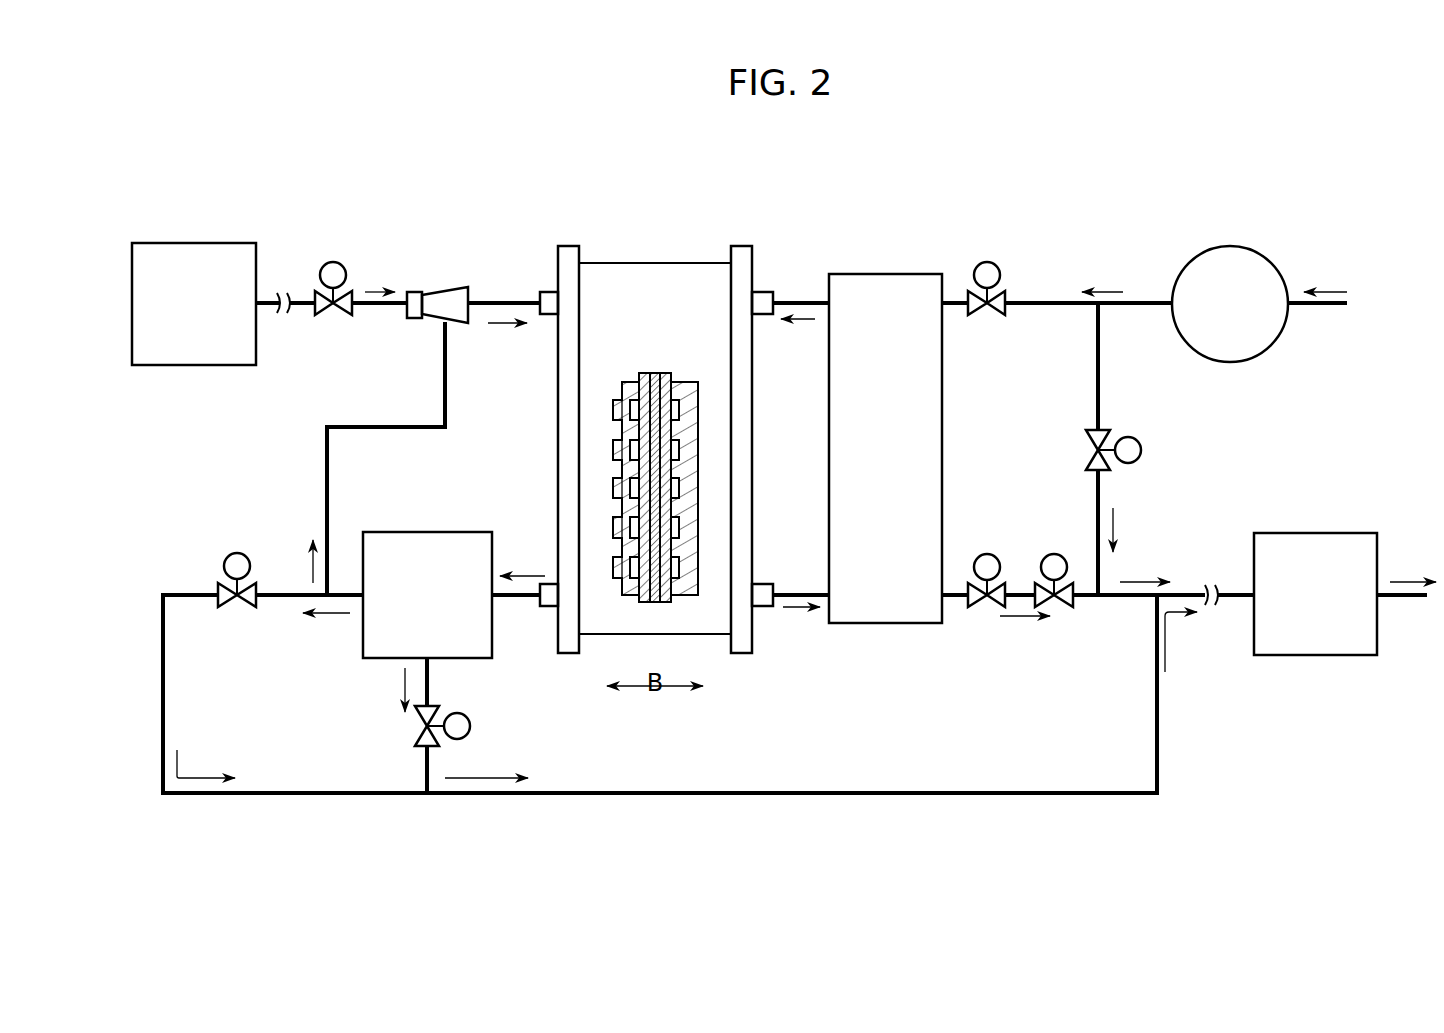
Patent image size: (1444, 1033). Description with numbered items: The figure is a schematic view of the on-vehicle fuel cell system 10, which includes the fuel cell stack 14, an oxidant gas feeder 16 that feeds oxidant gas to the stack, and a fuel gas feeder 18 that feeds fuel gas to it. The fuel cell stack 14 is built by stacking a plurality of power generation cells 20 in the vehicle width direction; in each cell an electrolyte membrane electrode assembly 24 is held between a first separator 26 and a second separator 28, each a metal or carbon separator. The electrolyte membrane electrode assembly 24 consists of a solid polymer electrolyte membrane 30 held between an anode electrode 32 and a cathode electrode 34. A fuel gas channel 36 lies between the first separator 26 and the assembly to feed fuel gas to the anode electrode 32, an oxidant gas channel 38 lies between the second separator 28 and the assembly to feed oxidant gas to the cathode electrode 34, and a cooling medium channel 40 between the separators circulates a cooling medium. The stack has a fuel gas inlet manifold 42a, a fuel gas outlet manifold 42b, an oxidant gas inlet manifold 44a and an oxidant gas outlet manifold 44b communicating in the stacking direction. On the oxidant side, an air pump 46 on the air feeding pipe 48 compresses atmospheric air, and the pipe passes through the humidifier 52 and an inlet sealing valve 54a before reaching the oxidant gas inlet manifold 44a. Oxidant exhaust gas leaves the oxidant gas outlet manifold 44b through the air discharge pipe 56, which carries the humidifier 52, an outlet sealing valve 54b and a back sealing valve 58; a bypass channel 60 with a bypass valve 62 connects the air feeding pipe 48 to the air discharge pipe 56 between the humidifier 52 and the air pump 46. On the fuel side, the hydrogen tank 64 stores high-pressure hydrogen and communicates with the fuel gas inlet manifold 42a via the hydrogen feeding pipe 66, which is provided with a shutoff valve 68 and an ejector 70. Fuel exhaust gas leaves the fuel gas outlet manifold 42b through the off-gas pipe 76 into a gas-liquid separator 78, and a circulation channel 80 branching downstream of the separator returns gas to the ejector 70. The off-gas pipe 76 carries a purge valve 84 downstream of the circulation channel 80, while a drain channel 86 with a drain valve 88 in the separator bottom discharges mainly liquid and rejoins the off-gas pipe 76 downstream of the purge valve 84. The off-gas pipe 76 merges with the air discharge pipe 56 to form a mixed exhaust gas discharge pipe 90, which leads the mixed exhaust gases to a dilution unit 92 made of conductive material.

The fuel cell system 10 is at (860, 196).
The fuel cell stack 14 is at (658, 263).
The oxidant gas feeder 16 is at (1275, 226).
The fuel gas feeder 18 is at (327, 208).
The power generation cell 20 is at (678, 290).
The electrolyte membrane electrode assembly 24 is at (613, 440).
The first separator 26 is at (527, 487).
The second separator 28 is at (741, 481).
The solid polymer electrolyte membrane 30 is at (653, 376).
The anode electrode 32 is at (643, 376).
The cathode electrode 34 is at (687, 462).
The fuel gas channel 36 is at (637, 452).
The oxidant gas channel 38 is at (675, 452).
The cooling medium channel 40 is at (617, 505).
The fuel gas inlet manifold 42a is at (545, 298).
The fuel gas outlet manifold 42b is at (548, 608).
The oxidant gas inlet manifold 44a is at (764, 300).
The oxidant gas outlet manifold 44b is at (762, 608).
The air pump 46 is at (1223, 246).
The air feeding pipe 48 is at (1140, 301).
The humidifier 52 is at (874, 275).
The inlet sealing valve 54a is at (989, 269).
The outlet sealing valve 54b is at (989, 556).
The air discharge pipe 56 is at (791, 593).
The back sealing valve 58 is at (1056, 556).
The bypass channel 60 is at (1101, 493).
The bypass valve 62 is at (1128, 440).
The hydrogen tank 64 is at (223, 243).
The hydrogen feeding pipe 66 is at (382, 312).
The shutoff valve 68 is at (336, 262).
The ejector 70 is at (448, 292).
The off-gas pipe 76 is at (517, 598).
The gas-liquid separator 78 is at (370, 639).
The circulation channel 80 is at (326, 516).
The purge valve 84 is at (230, 563).
The drain channel 86 is at (425, 760).
The drain valve 88 is at (468, 733).
The mixed exhaust gas discharge pipe 90 is at (1236, 604).
The dilution unit 92 is at (1316, 524).